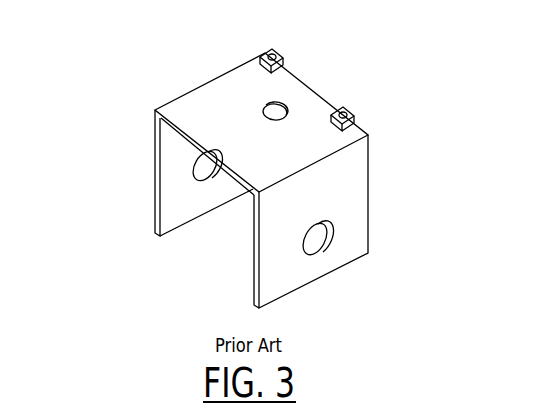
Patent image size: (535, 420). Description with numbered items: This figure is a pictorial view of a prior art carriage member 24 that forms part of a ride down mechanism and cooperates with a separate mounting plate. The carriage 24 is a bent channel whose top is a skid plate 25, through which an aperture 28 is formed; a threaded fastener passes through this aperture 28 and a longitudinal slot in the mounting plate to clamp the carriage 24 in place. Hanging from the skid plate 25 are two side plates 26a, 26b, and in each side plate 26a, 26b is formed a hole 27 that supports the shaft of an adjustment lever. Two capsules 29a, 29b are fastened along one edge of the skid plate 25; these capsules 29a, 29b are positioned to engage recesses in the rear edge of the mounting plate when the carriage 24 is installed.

The carriage member 24 is at (163, 104).
The skid plate 25 is at (167, 144).
The side plate 26a is at (155, 212).
The side plate 26b is at (253, 275).
The hole 27 is at (198, 183).
The aperture 28 is at (268, 104).
The capsule 29a is at (355, 114).
The capsule 29b is at (286, 61).